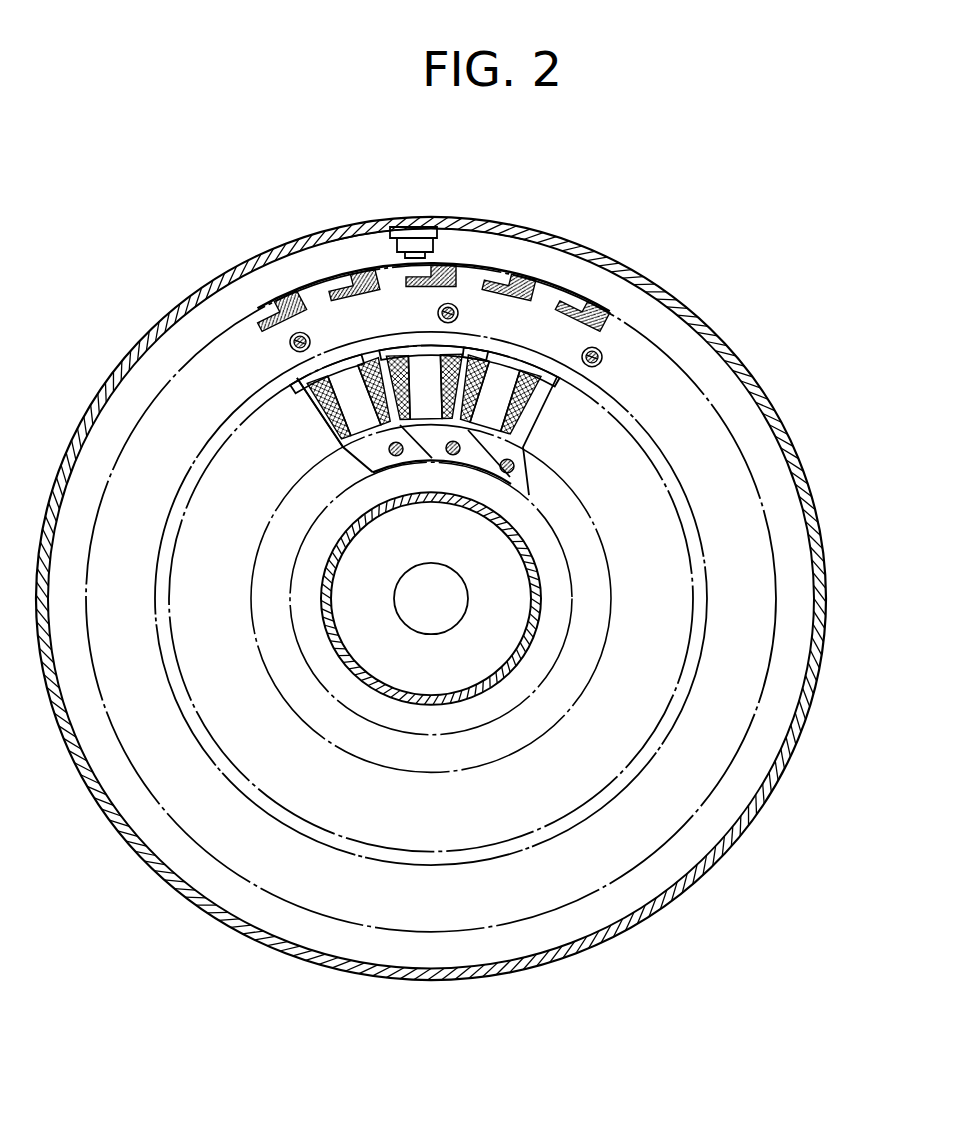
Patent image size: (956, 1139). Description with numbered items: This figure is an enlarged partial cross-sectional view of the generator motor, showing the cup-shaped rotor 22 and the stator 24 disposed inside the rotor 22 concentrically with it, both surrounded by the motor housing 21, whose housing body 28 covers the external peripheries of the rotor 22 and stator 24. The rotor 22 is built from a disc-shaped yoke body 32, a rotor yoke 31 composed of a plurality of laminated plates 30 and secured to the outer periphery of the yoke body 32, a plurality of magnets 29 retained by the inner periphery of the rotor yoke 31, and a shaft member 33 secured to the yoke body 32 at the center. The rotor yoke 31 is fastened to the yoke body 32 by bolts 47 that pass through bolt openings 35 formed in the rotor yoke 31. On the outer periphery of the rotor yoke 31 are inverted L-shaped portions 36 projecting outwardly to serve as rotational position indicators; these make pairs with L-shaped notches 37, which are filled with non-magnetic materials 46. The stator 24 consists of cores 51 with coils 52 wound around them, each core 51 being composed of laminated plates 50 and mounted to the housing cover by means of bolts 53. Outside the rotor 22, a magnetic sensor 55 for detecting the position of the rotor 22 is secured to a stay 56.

The motor housing 21 is at (604, 232).
The rotor 22 is at (686, 342).
The stator 24 is at (298, 378).
The housing body 28 is at (586, 228).
The magnets 29 is at (524, 350).
The laminated plates 30 is at (646, 320).
The rotor yoke 31 is at (696, 404).
The yoke body 32 is at (672, 470).
The shaft member 33 is at (545, 566).
The bolt openings 35 is at (602, 362).
The inverted L-shaped portions 36 is at (335, 288).
The L-shaped notches 37 is at (292, 302).
The non-magnetic materials 46 is at (290, 330).
The bolts 47 is at (590, 370).
The laminated plates 50 is at (366, 430).
The cores 51 is at (343, 447).
The coils 52 is at (326, 421).
The bolts 53 is at (530, 454).
The magnetic sensor 55 is at (438, 241).
The stay 56 is at (453, 215).